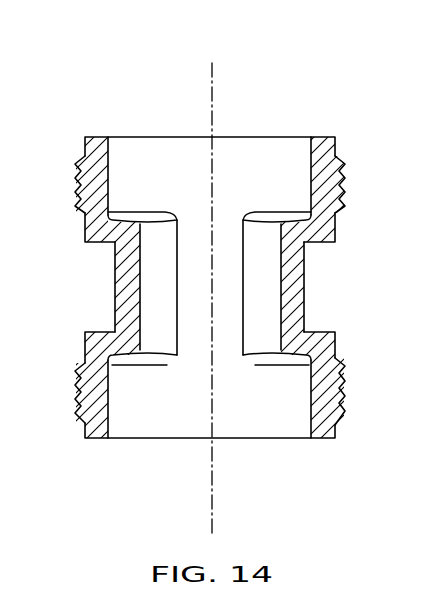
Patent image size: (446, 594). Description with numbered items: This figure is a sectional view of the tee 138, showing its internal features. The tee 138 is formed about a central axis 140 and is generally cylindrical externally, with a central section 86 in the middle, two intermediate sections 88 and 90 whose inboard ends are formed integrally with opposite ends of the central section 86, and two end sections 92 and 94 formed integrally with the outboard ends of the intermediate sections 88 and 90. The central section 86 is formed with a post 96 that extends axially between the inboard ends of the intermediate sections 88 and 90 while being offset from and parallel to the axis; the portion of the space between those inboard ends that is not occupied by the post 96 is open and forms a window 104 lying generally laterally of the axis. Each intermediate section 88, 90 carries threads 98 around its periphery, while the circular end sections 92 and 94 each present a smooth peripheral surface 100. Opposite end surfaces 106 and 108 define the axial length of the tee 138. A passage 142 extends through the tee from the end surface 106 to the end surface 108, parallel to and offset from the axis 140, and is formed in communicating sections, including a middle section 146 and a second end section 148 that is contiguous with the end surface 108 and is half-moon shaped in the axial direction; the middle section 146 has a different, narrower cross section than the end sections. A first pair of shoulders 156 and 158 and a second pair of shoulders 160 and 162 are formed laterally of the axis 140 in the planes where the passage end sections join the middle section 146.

The central section 86 is at (310, 280).
The intermediate section 88 is at (70, 200).
The intermediate section 90 is at (72, 367).
The end section 92 is at (83, 147).
The end section 94 is at (80, 428).
The post 96 is at (306, 252).
The threads 98 is at (78, 178).
The smooth peripheral surface 100 is at (337, 148).
The window 104 is at (100, 285).
The end surface 106 is at (337, 136).
The end surface 108 is at (314, 437).
The tee 138 is at (311, 107).
The central axis 140 is at (211, 90).
The passage 142 is at (284, 158).
The middle section 146 is at (158, 295).
The second end section 148 is at (107, 416).
The shoulder 156 is at (137, 218).
The shoulder 158 is at (269, 216).
The shoulder 160 is at (148, 366).
The shoulder 162 is at (284, 365).